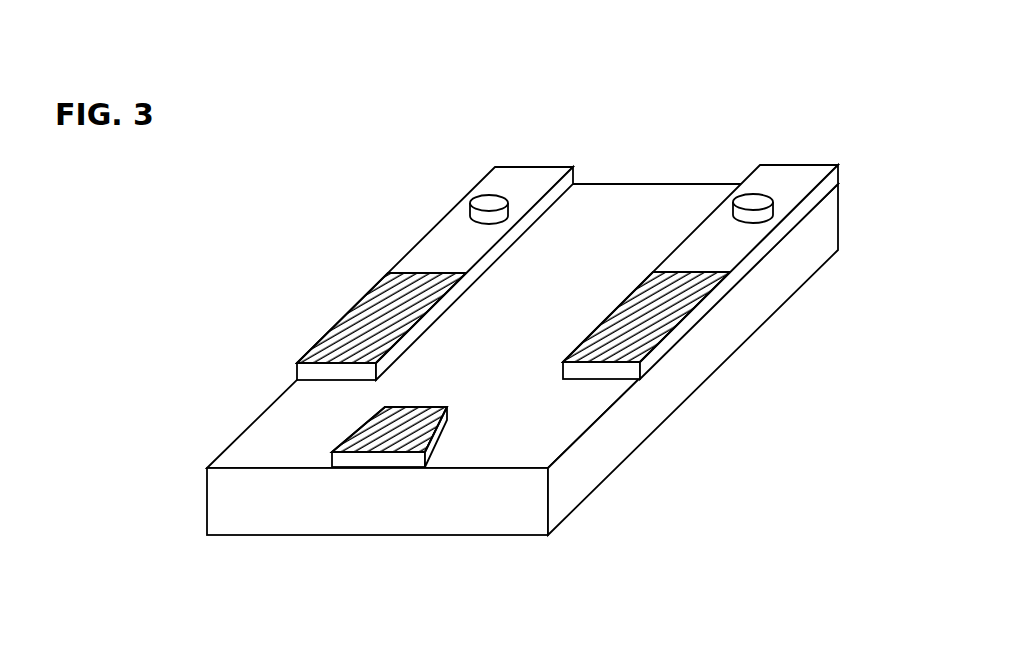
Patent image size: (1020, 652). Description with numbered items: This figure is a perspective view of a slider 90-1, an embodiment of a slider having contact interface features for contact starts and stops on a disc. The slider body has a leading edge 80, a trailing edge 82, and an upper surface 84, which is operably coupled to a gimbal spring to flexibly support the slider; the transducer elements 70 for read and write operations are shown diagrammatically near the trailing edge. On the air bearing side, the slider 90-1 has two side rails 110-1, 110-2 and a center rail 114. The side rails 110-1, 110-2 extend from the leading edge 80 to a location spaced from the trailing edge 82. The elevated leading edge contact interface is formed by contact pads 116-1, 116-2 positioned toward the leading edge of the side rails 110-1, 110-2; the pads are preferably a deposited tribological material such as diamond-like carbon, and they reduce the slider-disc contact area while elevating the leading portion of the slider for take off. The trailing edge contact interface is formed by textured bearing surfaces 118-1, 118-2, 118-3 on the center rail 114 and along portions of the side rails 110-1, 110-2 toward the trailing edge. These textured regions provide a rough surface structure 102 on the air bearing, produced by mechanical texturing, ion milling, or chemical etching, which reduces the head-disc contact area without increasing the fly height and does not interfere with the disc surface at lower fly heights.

The slider 90-1 is at (623, 157).
The leading edge 80 is at (685, 183).
The trailing edge 82 is at (415, 510).
The upper surface 84 is at (593, 495).
The side rail 110-1 is at (387, 288).
The side rail 110-2 is at (800, 178).
The center rail 114 is at (430, 412).
The contact pad 116-1 is at (492, 205).
The contact pad 116-2 is at (753, 200).
The textured bearing surface 118-1 is at (373, 432).
The textured bearing surface 118-2 is at (357, 328).
The textured bearing surface 118-3 is at (641, 332).
The rough surface structure 102 is at (418, 300).
The transducer elements 70 is at (369, 442).